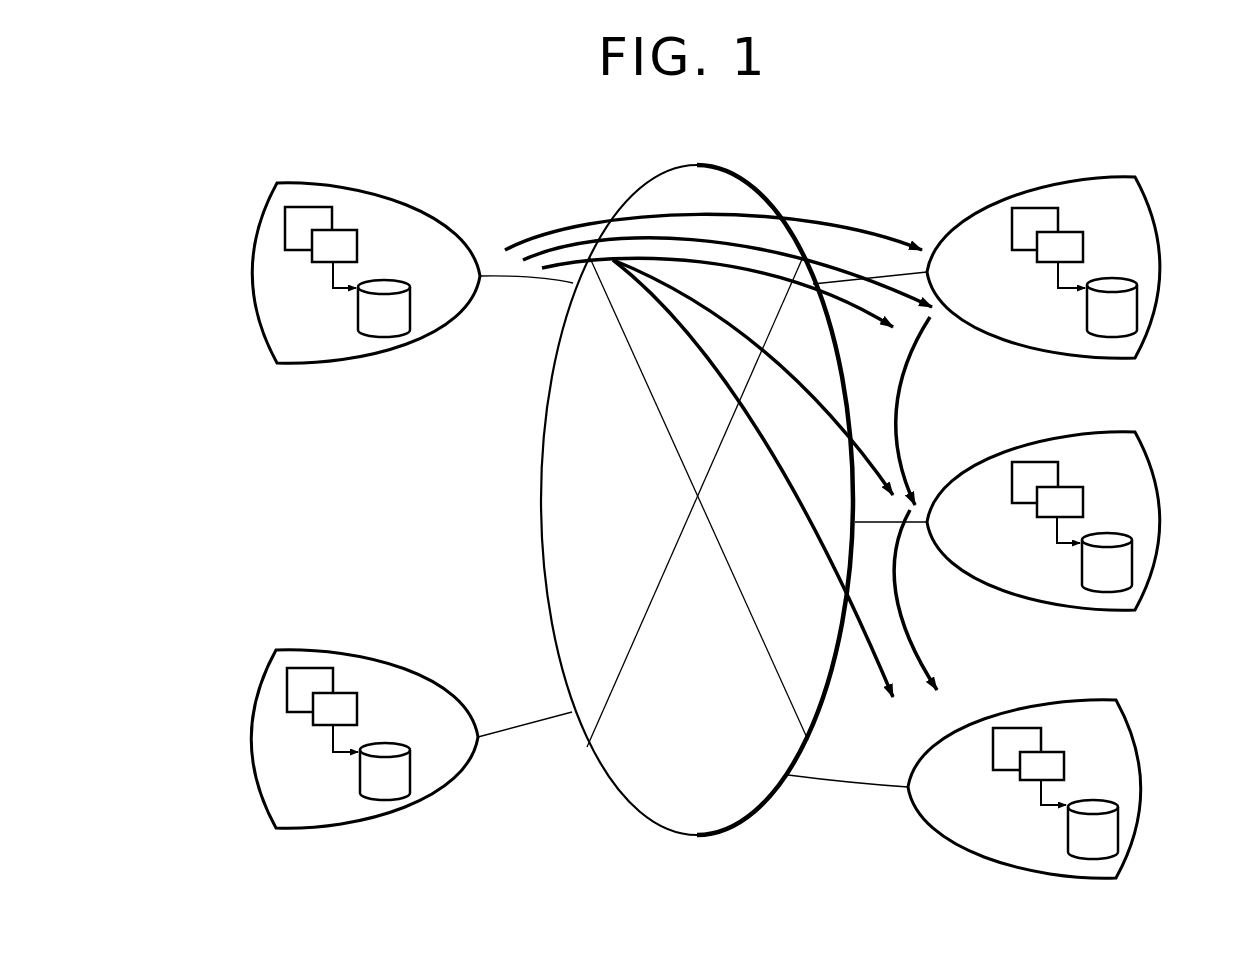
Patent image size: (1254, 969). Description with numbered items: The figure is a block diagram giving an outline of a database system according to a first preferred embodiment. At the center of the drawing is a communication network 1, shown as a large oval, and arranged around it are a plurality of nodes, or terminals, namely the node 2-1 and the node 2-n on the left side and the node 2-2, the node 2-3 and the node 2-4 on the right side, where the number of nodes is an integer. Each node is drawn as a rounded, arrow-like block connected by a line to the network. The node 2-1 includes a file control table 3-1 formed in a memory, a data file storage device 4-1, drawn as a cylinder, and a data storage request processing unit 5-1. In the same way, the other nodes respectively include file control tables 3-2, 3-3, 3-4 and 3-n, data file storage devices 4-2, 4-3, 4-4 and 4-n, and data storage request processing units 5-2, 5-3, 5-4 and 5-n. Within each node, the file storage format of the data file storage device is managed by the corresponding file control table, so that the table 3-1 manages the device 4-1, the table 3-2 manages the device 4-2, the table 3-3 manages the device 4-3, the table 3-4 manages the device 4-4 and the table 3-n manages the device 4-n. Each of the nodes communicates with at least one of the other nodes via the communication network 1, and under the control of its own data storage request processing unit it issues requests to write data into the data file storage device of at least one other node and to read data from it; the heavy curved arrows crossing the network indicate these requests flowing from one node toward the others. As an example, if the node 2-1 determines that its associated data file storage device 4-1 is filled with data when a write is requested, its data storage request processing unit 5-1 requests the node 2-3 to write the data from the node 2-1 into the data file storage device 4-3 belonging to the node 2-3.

The communication network 1 is at (760, 185).
The node 2-1 is at (344, 257).
The node 2-2 is at (1065, 240).
The node 2-3 is at (1058, 509).
The node 2-4 is at (1038, 775).
The node 2-n is at (349, 714).
The file control table 3-1 is at (357, 250).
The file control table 3-2 is at (1083, 245).
The file control table 3-3 is at (1097, 483).
The file control table 3-4 is at (1064, 757).
The file control table 3-n is at (357, 710).
The data file storage device 4-1 is at (409, 322).
The data file storage device 4-2 is at (1137, 322).
The data file storage device 4-3 is at (1132, 577).
The data file storage device 4-4 is at (1118, 840).
The data file storage device 4-n is at (409, 783).
The data storage request processing unit 5-1 is at (285, 233).
The data storage request processing unit 5-2 is at (1012, 228).
The data storage request processing unit 5-3 is at (1012, 485).
The data storage request processing unit 5-4 is at (993, 748).
The data storage request processing unit 5-n is at (287, 686).